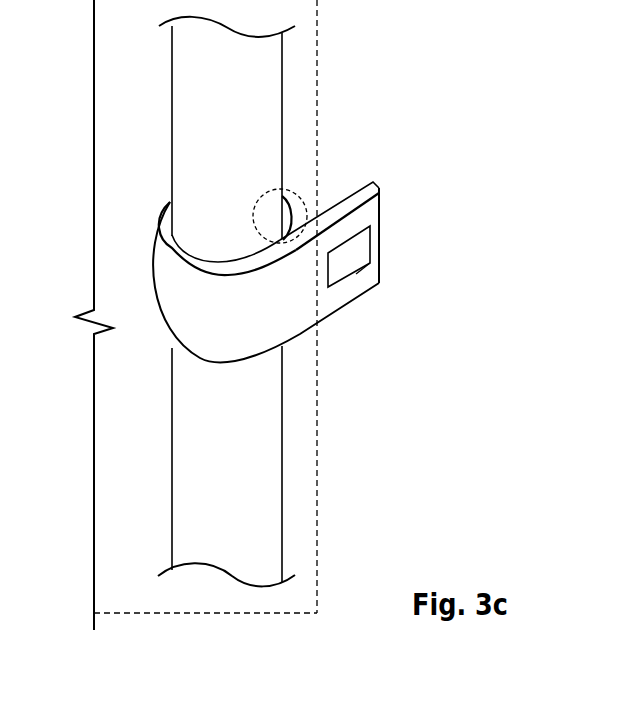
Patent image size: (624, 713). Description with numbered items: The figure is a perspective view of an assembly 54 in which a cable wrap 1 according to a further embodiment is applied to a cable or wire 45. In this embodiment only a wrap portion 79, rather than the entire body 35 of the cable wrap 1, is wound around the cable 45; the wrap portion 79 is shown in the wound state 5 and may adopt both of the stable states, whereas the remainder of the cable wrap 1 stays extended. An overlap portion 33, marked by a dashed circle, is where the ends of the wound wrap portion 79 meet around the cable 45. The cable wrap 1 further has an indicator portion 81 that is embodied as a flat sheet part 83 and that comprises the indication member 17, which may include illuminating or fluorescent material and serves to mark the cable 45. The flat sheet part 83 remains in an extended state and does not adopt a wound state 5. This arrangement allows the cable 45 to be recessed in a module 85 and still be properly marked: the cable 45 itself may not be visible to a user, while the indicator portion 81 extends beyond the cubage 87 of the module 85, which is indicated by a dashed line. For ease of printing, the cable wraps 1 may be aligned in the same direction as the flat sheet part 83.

The cable wrap 1 is at (225, 275).
The wound state 5 is at (192, 291).
The wrap portion 79 is at (192, 291).
The indication member 17 is at (357, 274).
The overlap portion 33 is at (288, 197).
The body 35 is at (178, 321).
The cable or wire 45 is at (263, 467).
The assembly 54 is at (75, 43).
The indicator portion 81 is at (342, 330).
The flat sheet part 83 is at (363, 212).
The module 85 is at (247, 306).
The cubage 87 is at (318, 510).